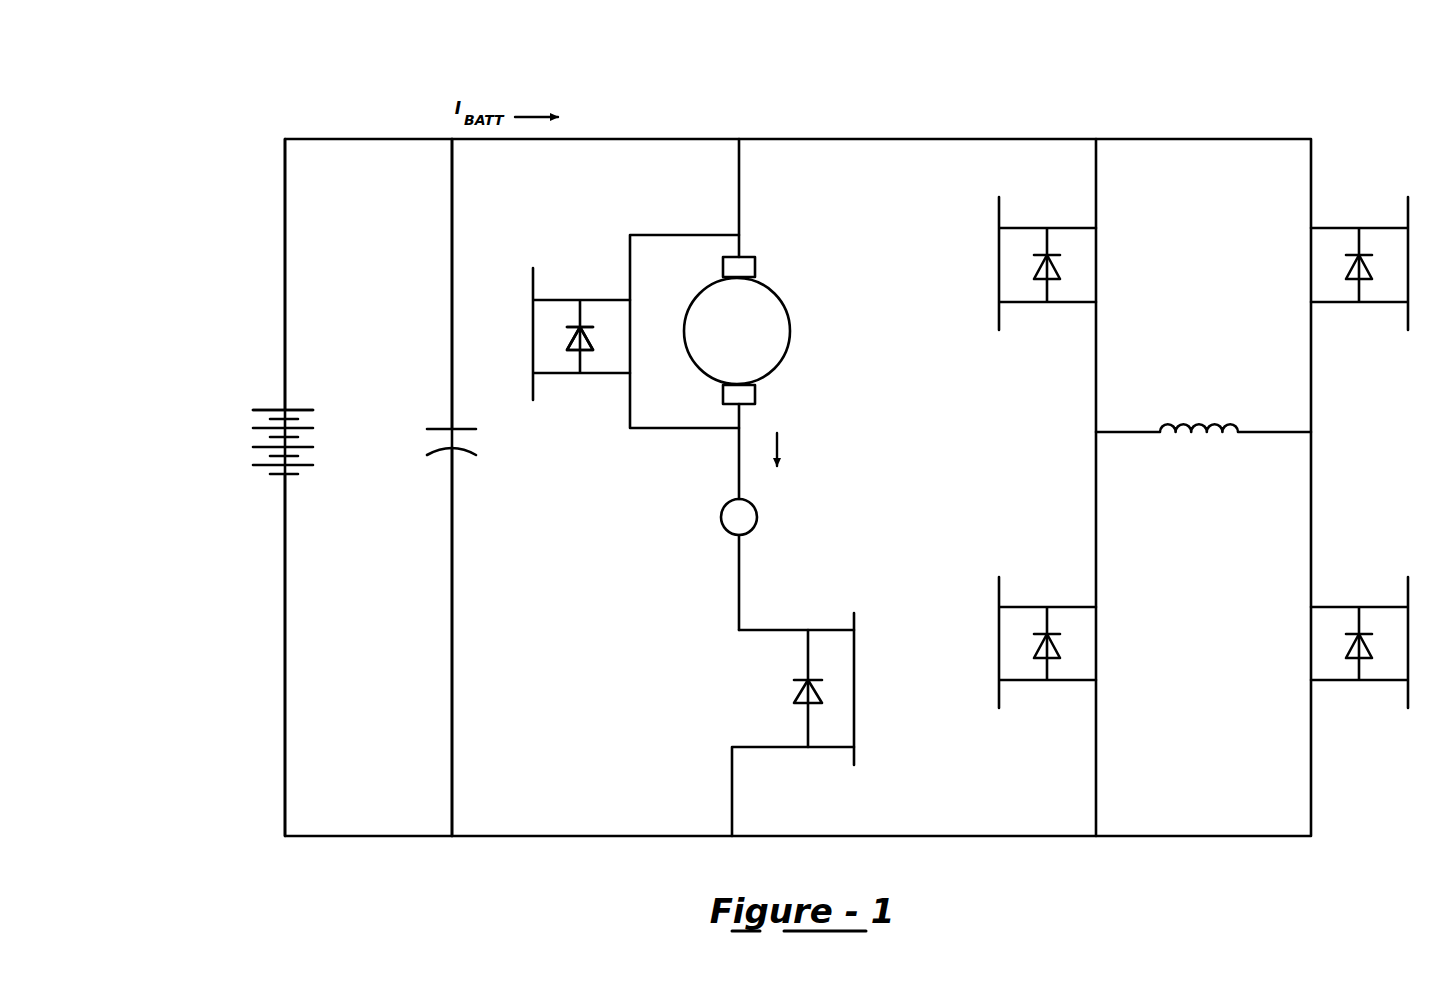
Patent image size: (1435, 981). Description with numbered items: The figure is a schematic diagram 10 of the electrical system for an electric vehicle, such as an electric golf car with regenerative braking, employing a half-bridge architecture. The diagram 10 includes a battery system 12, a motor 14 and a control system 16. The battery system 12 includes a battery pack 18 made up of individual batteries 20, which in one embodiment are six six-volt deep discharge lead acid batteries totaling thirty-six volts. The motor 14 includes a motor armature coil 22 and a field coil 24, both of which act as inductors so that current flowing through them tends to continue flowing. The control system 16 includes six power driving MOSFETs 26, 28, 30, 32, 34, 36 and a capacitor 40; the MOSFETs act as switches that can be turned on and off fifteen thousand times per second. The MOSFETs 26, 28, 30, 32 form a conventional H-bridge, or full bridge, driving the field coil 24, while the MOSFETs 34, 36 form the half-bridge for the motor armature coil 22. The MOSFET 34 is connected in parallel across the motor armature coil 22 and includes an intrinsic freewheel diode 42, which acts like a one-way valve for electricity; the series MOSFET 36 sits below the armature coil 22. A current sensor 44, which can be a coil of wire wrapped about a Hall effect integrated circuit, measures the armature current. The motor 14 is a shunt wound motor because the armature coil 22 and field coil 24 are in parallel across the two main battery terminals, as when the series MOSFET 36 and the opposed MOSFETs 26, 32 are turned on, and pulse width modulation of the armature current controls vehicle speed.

The schematic diagram 10 is at (1052, 101).
The battery system 12 is at (204, 338).
The motor 14 is at (803, 208).
The control system 16 is at (905, 507).
The battery pack 18 is at (308, 480).
The batteries 20 is at (300, 410).
The motor armature coil 22 is at (778, 372).
The field coil 24 is at (1178, 418).
The power driving MOSFET 26 is at (1030, 303).
The power driving MOSFET 28 is at (1345, 303).
The power driving MOSFET 30 is at (1028, 607).
The power driving MOSFET 32 is at (1352, 607).
The power MOSFET 34 is at (563, 297).
The series power MOSFET 36 is at (785, 627).
The capacitor 40 is at (472, 450).
The freewheel diode 42 is at (583, 362).
The current sensor 44 is at (720, 518).